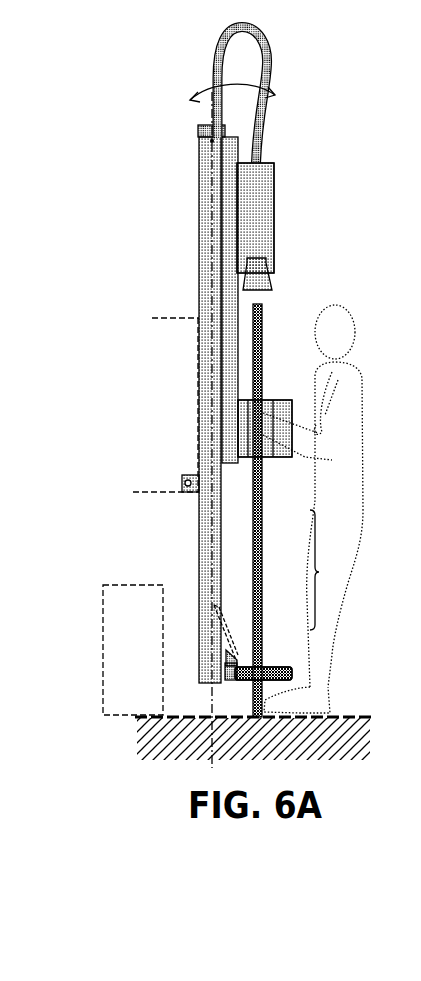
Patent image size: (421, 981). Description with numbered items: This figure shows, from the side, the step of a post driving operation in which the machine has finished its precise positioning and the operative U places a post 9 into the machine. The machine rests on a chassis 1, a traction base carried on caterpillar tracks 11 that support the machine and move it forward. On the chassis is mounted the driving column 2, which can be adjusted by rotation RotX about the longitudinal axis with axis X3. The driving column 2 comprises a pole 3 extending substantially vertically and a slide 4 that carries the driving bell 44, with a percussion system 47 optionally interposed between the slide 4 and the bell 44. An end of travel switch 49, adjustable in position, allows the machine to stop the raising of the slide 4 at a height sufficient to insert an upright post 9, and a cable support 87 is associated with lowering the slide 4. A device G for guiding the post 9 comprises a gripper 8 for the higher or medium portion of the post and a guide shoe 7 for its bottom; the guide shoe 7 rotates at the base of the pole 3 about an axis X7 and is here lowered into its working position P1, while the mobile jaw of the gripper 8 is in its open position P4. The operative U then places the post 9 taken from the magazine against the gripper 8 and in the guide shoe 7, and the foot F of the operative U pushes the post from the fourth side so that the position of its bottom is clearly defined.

The chassis 1 is at (152, 316).
The driving column 2 is at (198, 205).
The pole 3 is at (198, 265).
The slide 4 is at (273, 156).
The guide shoe 7 is at (278, 664).
The gripper 8 is at (281, 474).
The post 9 is at (266, 340).
The caterpillar tracks 11 is at (137, 585).
The driving bell 44 is at (276, 283).
The percussion system 47 is at (262, 239).
The end of travel switch 49 is at (210, 141).
The cable support 87 is at (259, 114).
The rotation about the longitudinal axis X RotX is at (209, 99).
The axis X3 is at (185, 481).
The axis X7 is at (213, 683).
The working position P1 is at (277, 670).
The open position P4 is at (276, 424).
The device for guiding the post G is at (322, 570).
The operative U is at (348, 477).
The foot F is at (304, 700).